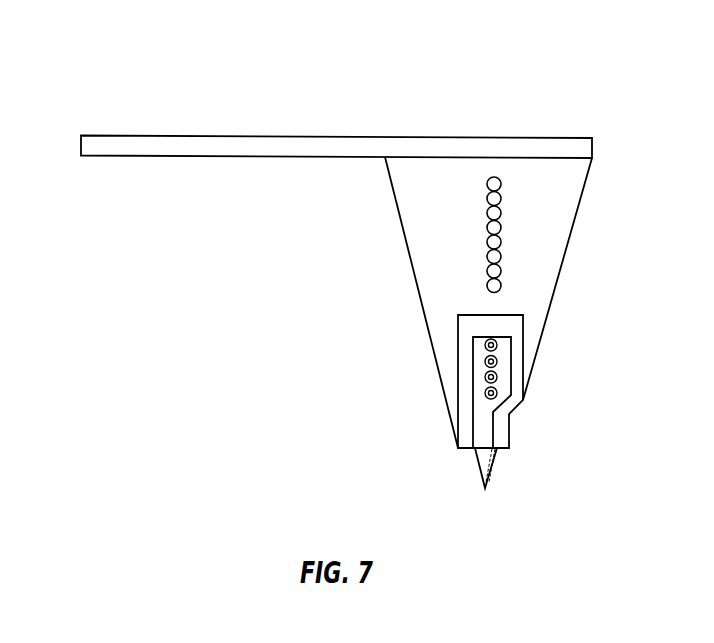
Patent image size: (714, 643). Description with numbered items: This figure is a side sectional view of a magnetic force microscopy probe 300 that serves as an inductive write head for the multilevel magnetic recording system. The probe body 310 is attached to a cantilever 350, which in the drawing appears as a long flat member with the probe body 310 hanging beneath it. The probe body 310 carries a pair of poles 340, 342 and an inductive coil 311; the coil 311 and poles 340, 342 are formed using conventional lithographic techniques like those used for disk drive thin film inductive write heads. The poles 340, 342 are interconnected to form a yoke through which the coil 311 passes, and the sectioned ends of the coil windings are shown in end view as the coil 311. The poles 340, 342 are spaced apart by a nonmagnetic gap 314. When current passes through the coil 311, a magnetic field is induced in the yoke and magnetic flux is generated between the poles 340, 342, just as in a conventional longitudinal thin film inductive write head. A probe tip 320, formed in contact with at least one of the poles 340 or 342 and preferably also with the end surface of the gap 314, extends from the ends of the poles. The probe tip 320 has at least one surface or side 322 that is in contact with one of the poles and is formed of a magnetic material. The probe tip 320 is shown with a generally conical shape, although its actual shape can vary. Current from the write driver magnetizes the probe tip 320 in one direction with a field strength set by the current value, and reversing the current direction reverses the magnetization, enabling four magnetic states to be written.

The probe 300 is at (150, 58).
The cantilever 350 is at (548, 138).
The probe body 310 is at (548, 330).
The inductive coil 311 is at (502, 286).
The pole 340 is at (465, 398).
The pole 342 is at (501, 428).
The nonmagnetic gap 314 is at (478, 422).
The probe tip 320 is at (478, 457).
The surface or side of probe tip 322 is at (494, 469).